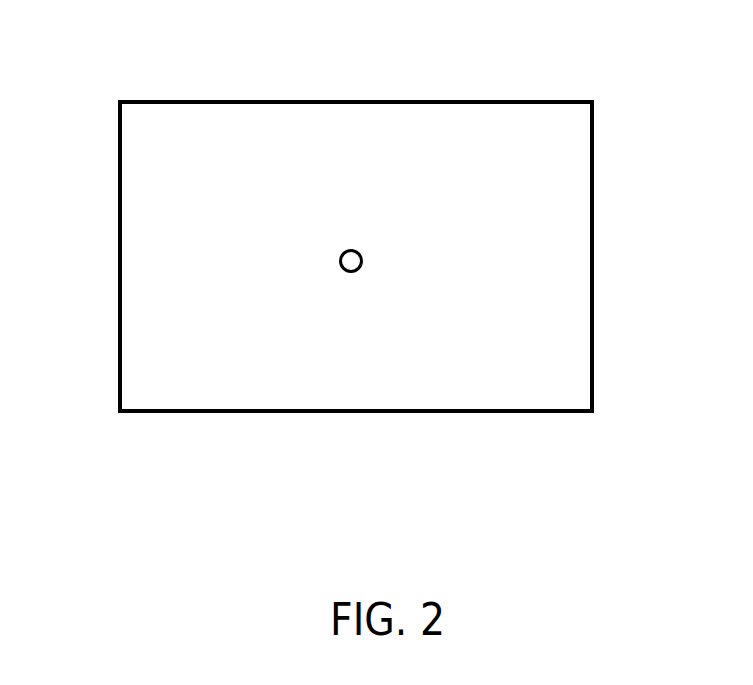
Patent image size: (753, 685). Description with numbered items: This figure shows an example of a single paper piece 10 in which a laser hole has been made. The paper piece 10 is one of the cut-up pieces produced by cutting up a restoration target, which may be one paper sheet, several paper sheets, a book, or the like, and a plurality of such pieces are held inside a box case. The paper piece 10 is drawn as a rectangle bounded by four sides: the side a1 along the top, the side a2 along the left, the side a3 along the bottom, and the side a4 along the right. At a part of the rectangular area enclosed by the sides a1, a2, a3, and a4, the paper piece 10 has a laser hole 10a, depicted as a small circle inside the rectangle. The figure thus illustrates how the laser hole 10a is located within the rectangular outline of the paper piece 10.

The paper piece 10 is at (548, 101).
The laser hole 10a is at (360, 251).
The side a1 is at (356, 76).
The side a2 is at (76, 256).
The side a3 is at (356, 434).
The side a4 is at (640, 256).